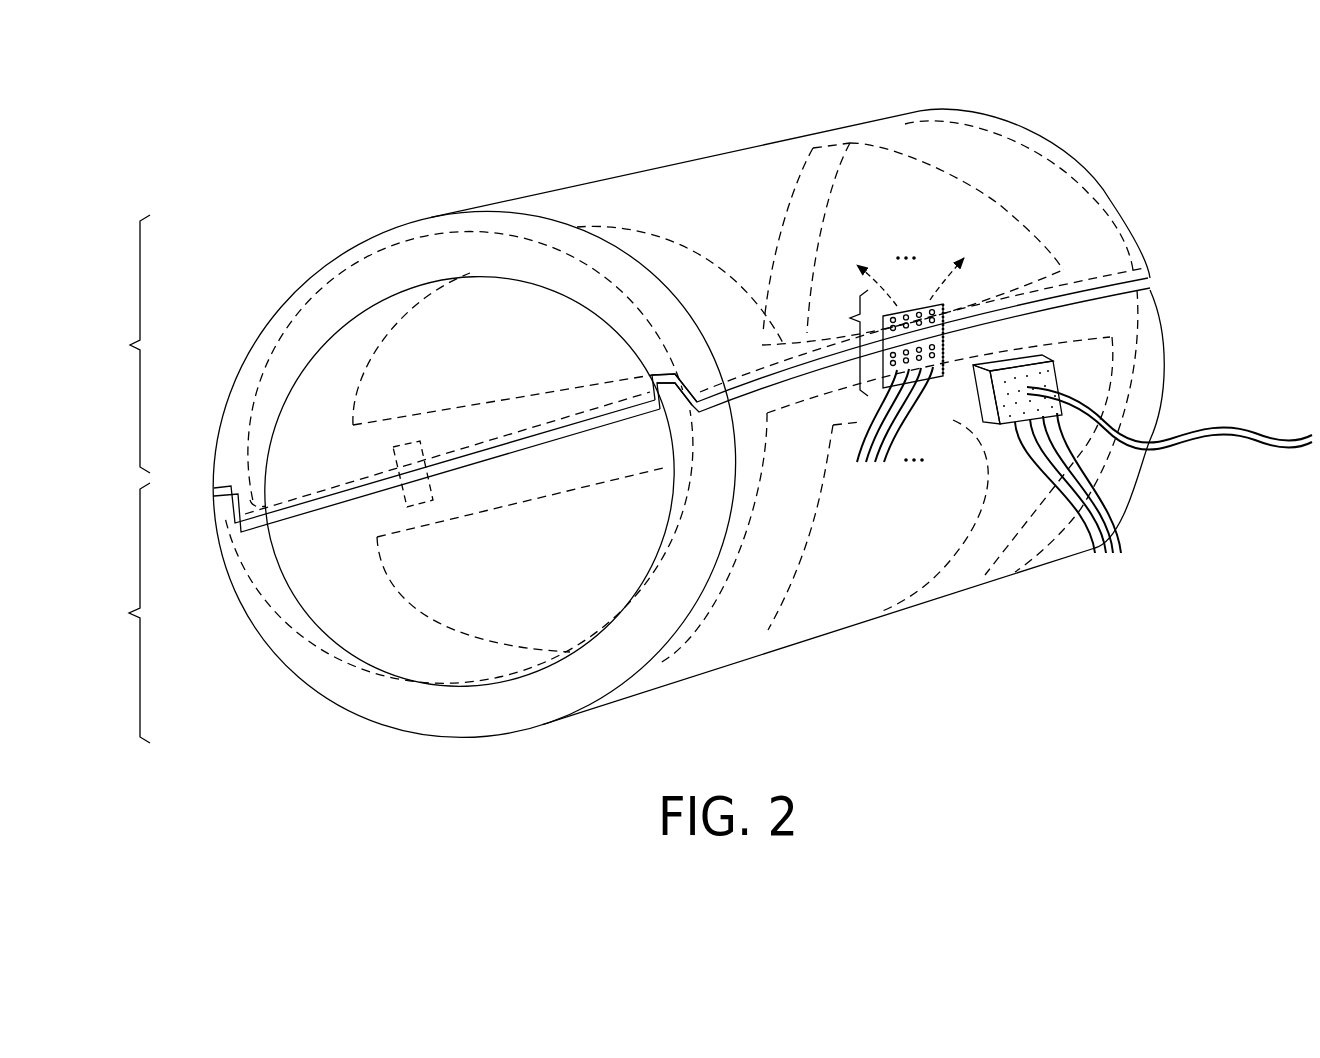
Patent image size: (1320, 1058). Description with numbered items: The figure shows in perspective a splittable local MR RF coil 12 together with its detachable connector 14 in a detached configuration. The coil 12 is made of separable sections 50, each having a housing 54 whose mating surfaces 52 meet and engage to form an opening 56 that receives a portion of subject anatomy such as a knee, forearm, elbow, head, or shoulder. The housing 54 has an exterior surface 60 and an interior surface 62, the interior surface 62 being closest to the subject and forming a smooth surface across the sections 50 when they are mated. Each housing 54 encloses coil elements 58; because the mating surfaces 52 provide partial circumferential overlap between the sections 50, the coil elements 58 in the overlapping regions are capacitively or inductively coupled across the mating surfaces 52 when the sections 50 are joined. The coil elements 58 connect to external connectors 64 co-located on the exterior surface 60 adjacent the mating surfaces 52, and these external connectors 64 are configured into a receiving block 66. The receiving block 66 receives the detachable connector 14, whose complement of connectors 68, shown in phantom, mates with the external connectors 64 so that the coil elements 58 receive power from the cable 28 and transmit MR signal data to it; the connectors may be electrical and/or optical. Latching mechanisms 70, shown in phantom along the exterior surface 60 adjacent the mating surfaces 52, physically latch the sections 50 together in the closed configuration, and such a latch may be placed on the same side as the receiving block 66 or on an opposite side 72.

The splittable local MR RF coil 12 is at (333, 216).
The detachable connector 14 is at (1053, 374).
The cable 28 is at (1262, 437).
The sections 50 is at (391, 479).
The mating surfaces 52 is at (672, 361).
The housing 54 is at (277, 312).
The opening 56 is at (482, 581).
The coil elements 58 is at (688, 368).
The exterior surface 60 is at (850, 588).
The interior surface 62 is at (467, 347).
The external connectors 64 is at (894, 432).
The receiving block 66 is at (890, 326).
The complement of connectors 68 is at (1070, 500).
The latching mechanisms 70 is at (397, 450).
The opposite side 72 is at (210, 397).